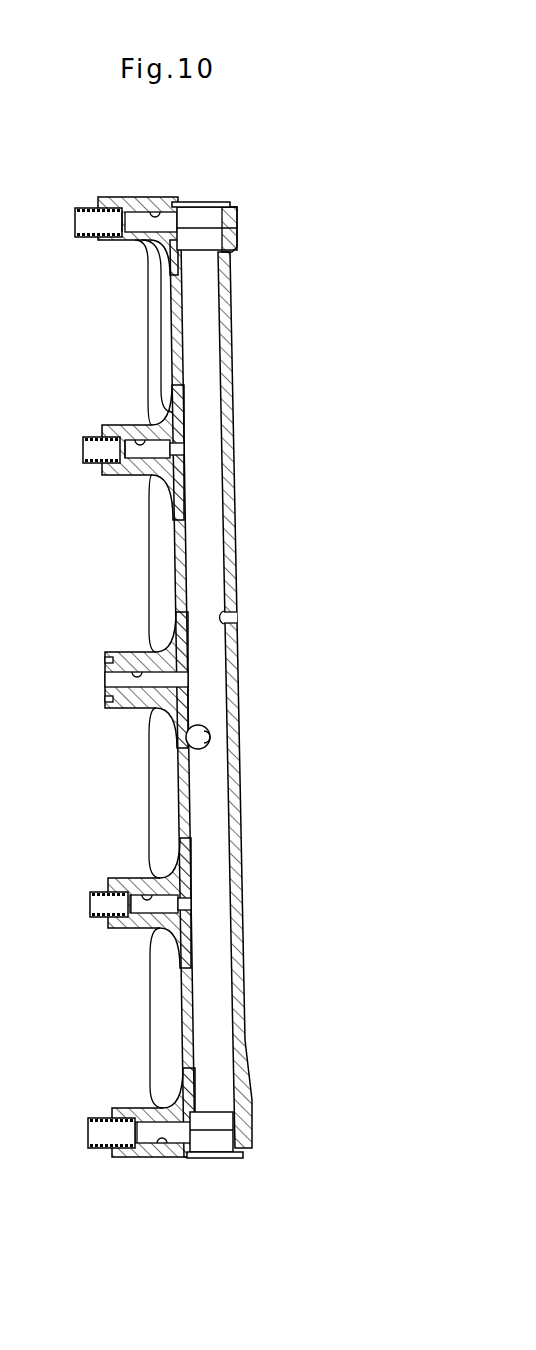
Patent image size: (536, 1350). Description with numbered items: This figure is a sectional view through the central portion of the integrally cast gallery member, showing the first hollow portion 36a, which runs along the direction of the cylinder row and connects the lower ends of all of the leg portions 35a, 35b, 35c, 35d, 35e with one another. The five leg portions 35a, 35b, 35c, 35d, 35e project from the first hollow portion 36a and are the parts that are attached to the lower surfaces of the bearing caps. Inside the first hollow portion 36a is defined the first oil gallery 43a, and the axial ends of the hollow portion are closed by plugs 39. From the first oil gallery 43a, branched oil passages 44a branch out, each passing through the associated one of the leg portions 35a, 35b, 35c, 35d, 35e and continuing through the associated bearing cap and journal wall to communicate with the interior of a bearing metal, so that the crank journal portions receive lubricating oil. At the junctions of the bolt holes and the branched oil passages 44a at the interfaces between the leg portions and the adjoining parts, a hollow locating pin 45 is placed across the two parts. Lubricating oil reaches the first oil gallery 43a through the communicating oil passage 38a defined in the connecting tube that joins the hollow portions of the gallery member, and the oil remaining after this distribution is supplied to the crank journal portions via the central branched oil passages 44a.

The first hollow portion 36a is at (233, 515).
The first leg portion 35a is at (148, 1100).
The second leg portion 35b is at (142, 933).
The third leg portion 35c is at (142, 714).
The fourth leg portion 35d is at (135, 480).
The fifth leg portion 35e is at (140, 248).
The branched oil passage 44a is at (157, 212).
The hollow locating pin 45 is at (82, 208).
The plug 39 is at (205, 202).
The first oil gallery 43a is at (226, 622).
The communicating oil passage 38a is at (212, 742).